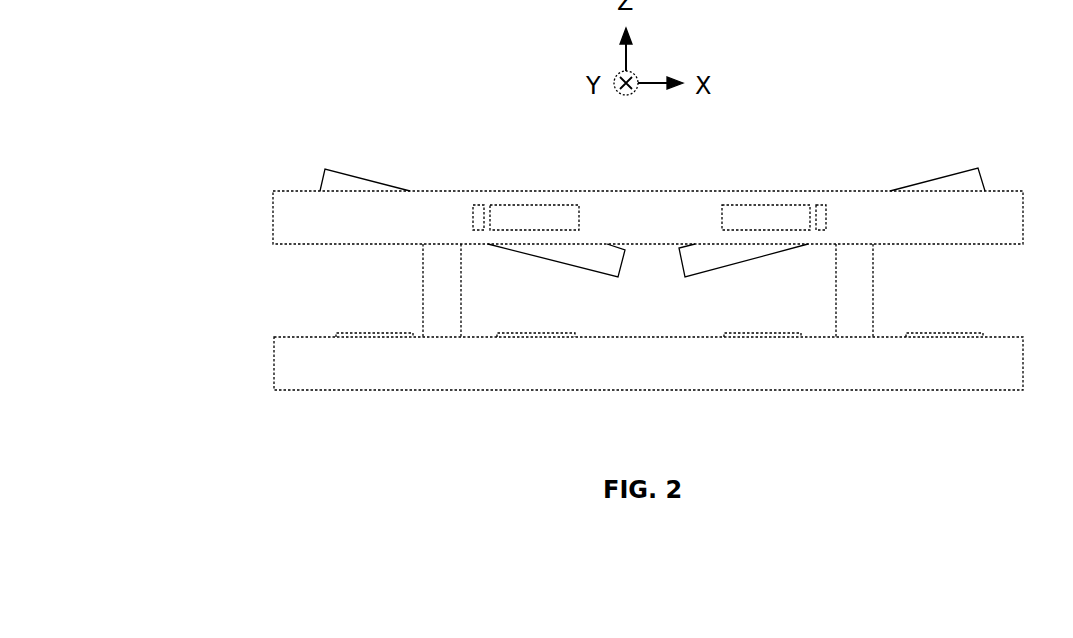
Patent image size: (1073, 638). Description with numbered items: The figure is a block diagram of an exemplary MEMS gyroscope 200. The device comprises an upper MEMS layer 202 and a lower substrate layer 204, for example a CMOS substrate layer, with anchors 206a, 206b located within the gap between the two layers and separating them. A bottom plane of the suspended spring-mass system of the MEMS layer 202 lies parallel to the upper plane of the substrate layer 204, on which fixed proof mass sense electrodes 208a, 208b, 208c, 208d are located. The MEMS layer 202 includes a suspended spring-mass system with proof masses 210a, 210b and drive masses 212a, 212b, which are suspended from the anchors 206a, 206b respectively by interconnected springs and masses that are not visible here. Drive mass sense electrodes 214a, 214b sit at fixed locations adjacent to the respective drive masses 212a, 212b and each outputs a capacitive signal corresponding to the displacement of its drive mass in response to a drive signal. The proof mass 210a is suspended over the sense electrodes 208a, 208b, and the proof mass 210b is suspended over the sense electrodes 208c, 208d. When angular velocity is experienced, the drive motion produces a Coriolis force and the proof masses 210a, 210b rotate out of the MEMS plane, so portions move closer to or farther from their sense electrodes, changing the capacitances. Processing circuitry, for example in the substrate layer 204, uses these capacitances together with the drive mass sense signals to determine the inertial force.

The MEMS gyroscope 200 is at (408, 476).
The MEMS layer 202 is at (273, 210).
The substrate layer 204 is at (274, 379).
The anchor 206a is at (423, 320).
The anchor 206b is at (836, 320).
The proof mass sense electrode 208a is at (352, 333).
The proof mass sense electrode 208b is at (510, 338).
The proof mass sense electrode 208c is at (740, 337).
The proof mass sense electrode 208d is at (945, 333).
The proof mass 210a is at (322, 169).
The proof mass 210b is at (962, 158).
The drive mass 212a is at (553, 205).
The drive mass 212b is at (752, 205).
The drive mass sense electrode 214a is at (477, 205).
The drive mass sense electrode 214b is at (818, 205).